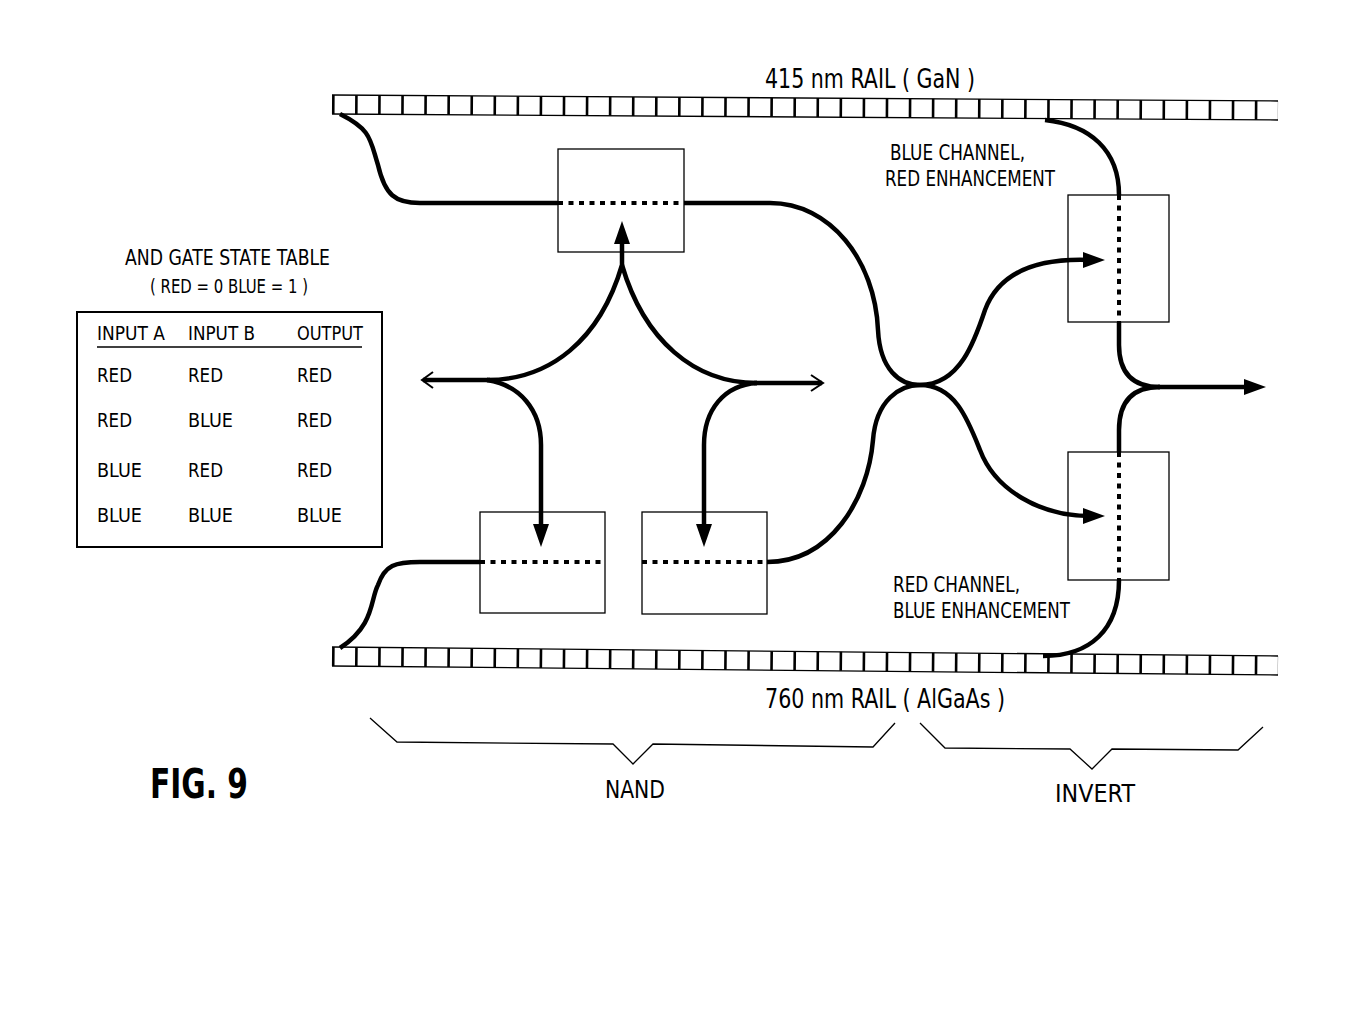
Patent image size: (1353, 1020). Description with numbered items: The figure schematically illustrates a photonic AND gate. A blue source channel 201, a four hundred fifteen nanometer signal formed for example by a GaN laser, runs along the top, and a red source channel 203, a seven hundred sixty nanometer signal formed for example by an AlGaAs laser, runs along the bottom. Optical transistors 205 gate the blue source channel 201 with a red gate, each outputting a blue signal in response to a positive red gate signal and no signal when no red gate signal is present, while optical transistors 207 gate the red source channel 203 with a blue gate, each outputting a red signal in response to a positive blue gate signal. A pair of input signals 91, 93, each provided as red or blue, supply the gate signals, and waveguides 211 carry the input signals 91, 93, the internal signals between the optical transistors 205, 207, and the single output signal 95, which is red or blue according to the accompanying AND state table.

The blue source channel 201 is at (800, 117).
The red source channel 203 is at (800, 650).
The optical transistor 205 is at (558, 220).
The optical transistor 207 is at (566, 512).
The waveguides 211 is at (848, 258).
The input signal 91 is at (432, 376).
The input signal 93 is at (801, 378).
The output signal 95 is at (1238, 382).